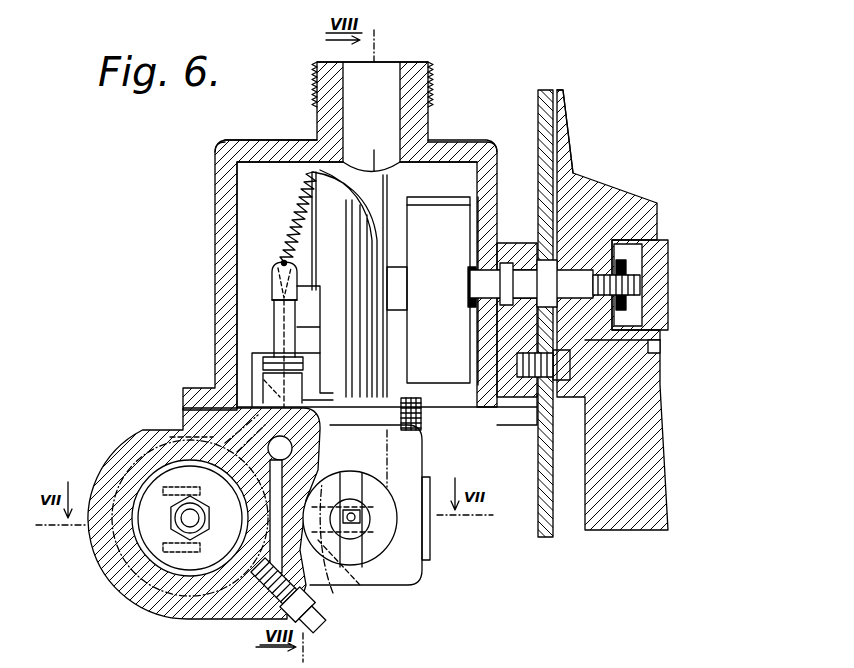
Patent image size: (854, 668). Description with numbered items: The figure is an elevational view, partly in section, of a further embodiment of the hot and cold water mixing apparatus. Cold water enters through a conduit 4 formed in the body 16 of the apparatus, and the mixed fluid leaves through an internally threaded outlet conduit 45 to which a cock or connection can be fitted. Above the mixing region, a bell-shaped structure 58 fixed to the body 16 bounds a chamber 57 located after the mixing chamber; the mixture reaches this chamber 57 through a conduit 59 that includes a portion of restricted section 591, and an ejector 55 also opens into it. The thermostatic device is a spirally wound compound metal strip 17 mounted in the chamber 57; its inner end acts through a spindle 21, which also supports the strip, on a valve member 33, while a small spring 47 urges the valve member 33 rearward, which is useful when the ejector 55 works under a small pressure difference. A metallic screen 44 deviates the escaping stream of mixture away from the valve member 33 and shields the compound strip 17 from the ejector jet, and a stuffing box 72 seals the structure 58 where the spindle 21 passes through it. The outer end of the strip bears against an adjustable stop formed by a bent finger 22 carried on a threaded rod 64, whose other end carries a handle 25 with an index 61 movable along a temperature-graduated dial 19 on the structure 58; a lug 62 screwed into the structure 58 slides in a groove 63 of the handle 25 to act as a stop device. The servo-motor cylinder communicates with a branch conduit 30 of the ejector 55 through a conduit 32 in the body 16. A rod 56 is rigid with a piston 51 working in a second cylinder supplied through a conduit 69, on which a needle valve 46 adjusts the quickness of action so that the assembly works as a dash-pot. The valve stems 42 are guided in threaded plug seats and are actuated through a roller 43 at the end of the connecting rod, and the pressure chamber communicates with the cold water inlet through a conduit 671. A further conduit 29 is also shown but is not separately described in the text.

The cold water conduit 4 is at (388, 530).
The body 16 is at (147, 430).
The compound metal strip 17 is at (487, 192).
The dial 19 is at (543, 110).
The spindle 21 is at (295, 248).
The bent finger 22 is at (440, 200).
The handle 25 is at (628, 377).
The valve stem 29 is at (275, 330).
The branch conduit 30 is at (262, 368).
The conduit 32 is at (226, 392).
The valve member 33 is at (283, 268).
The valve stems 42 is at (373, 533).
The roller 43 is at (355, 563).
The metallic screen 44 is at (367, 213).
The outlet conduit 45 is at (330, 84).
The needle valve 46 is at (272, 567).
The small spring 47 is at (297, 217).
The piston 51 is at (177, 527).
The ejector 55 is at (275, 320).
The piston rod 56 is at (152, 535).
The chamber 57 is at (239, 191).
The bell-shaped structure 58 is at (253, 153).
The conduit 59 is at (380, 452).
The portion of restricted section 591 is at (405, 428).
The index 61 is at (565, 138).
The lug 62 is at (562, 378).
The groove 63 is at (660, 347).
The threaded rod 64 is at (625, 232).
The conduit 671 is at (333, 593).
The conduit 69 is at (273, 513).
The stuffing box 72 is at (503, 262).